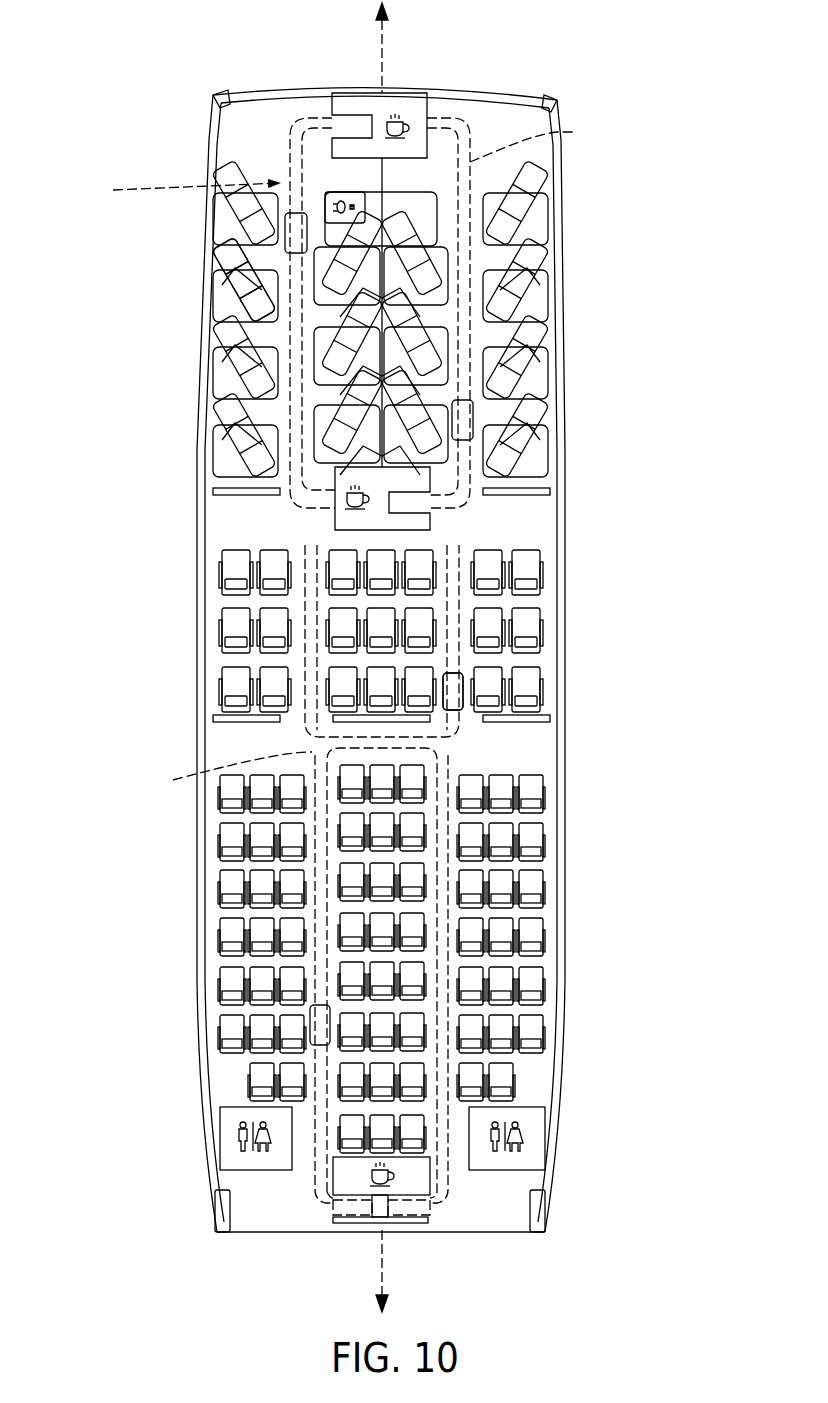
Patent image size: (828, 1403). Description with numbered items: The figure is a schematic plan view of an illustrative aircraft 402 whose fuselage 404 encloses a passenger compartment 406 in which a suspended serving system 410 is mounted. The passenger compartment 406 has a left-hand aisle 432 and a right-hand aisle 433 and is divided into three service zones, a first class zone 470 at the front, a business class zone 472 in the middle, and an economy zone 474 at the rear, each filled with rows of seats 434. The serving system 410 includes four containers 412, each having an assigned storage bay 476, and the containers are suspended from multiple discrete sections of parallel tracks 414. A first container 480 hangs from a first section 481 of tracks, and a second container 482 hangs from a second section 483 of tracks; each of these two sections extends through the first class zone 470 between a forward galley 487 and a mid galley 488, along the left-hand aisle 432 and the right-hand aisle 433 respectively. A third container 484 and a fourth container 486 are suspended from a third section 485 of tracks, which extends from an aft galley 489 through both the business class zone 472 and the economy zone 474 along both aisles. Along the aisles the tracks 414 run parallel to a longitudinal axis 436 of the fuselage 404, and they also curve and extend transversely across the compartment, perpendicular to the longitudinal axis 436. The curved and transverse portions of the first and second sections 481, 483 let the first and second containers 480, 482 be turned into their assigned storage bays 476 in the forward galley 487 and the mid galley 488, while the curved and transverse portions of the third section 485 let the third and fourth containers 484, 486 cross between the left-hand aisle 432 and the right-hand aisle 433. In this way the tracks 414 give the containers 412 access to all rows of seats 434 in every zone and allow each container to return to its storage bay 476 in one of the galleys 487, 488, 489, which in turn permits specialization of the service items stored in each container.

The aircraft 402 is at (205, 80).
The fuselage 404 is at (560, 186).
The passenger compartment 406 is at (513, 128).
The suspended serving system 410 is at (312, 110).
The containers 412 is at (462, 712).
The tracks 414 is at (179, 189).
The left-hand aisle 432 is at (306, 1222).
The right-hand aisle 433 is at (452, 1212).
The seats 434 is at (530, 416).
The longitudinal axis 436 is at (385, 67).
The first class zone 470 is at (585, 293).
The business class zone 472 is at (580, 620).
The economy zone 474 is at (575, 905).
The storage bay 476 is at (303, 122).
The first container 480 is at (287, 245).
The first section 481 is at (295, 338).
The second container 482 is at (465, 415).
The second section 483 is at (539, 137).
The third container 484 is at (323, 1036).
The third section 485 is at (225, 773).
The fourth container 486 is at (455, 680).
The forward galley 487 is at (422, 100).
The mid galley 488 is at (430, 518).
The aft galley 489 is at (420, 1172).